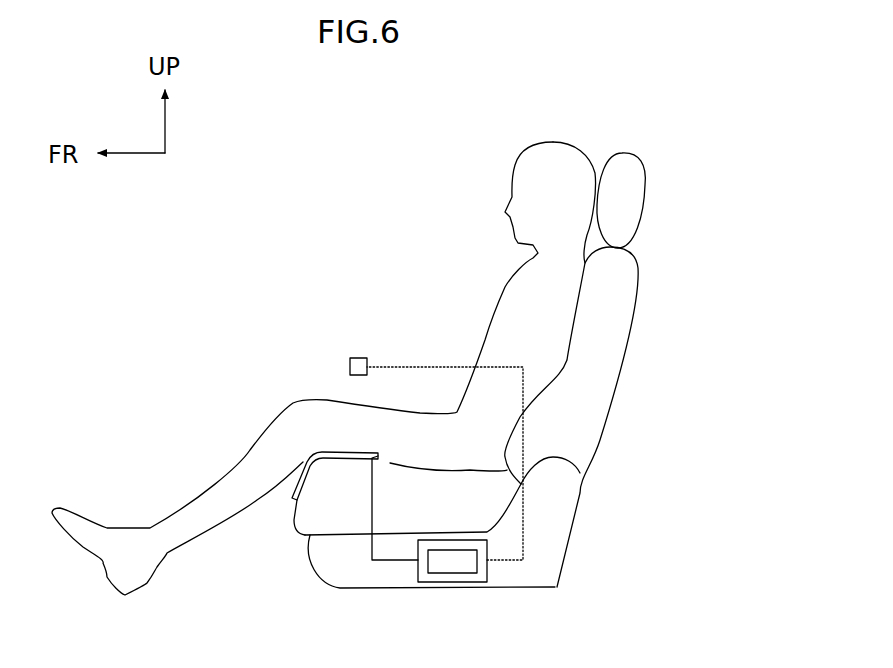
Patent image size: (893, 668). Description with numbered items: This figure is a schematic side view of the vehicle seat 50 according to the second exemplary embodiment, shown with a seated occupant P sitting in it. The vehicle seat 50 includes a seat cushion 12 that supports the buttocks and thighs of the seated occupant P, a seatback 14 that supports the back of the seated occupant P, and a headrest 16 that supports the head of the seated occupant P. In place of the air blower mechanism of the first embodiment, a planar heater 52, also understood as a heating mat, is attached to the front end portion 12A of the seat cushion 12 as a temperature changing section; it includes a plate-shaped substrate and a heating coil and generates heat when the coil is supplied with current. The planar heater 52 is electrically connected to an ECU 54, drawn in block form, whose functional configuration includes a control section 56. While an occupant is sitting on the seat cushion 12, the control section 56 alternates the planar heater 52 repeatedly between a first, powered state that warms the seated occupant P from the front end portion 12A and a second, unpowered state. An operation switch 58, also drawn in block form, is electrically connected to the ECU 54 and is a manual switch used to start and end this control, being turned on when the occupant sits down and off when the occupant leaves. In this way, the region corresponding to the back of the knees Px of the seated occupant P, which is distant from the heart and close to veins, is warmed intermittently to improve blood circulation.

The vehicle seat 50 is at (695, 205).
The headrest 16 is at (647, 180).
The seatback 14 is at (628, 350).
The seat cushion 12 is at (438, 467).
The front end portion of the seat cushion 12A is at (315, 436).
The planar heater 52 is at (347, 450).
The ECU 54 is at (468, 587).
The control section 56 is at (445, 585).
The operation switch 58 is at (363, 353).
The seated occupant P is at (473, 284).
The back of the knees Px is at (310, 460).